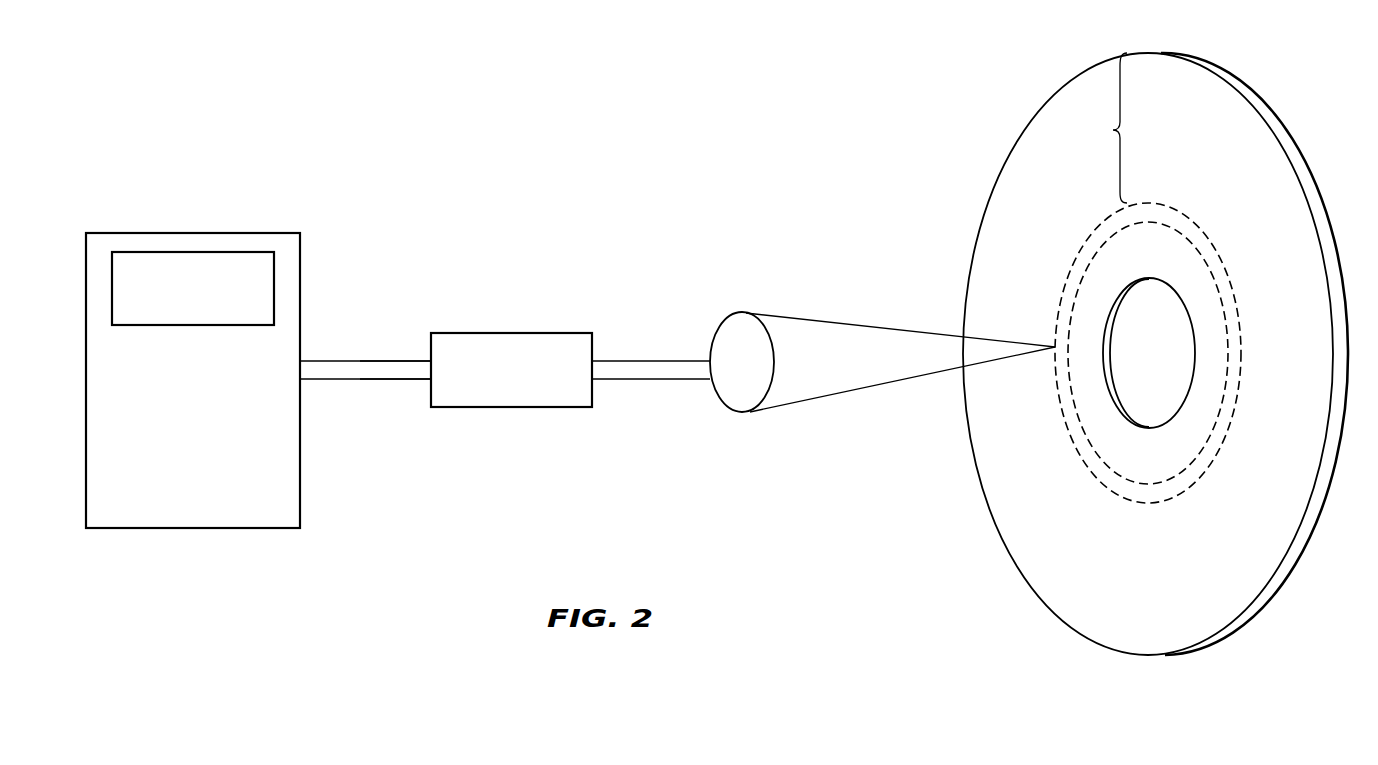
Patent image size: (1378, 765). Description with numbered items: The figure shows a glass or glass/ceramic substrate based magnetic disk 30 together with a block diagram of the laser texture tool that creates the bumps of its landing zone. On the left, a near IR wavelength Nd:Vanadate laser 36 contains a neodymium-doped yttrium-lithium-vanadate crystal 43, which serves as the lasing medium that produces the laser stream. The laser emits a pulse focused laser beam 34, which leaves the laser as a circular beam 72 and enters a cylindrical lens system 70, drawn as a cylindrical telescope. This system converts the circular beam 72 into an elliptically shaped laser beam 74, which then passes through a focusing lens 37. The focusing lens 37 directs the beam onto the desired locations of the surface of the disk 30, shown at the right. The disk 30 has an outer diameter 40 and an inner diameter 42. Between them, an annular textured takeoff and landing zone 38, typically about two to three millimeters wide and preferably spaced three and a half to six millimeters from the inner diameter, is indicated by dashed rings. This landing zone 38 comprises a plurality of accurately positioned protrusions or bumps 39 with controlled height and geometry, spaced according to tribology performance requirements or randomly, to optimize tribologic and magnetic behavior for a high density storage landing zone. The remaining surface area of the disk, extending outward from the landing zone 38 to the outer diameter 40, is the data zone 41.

The magnetic disk 30 is at (1027, 555).
The pulse focused laser beam 34 is at (338, 359).
The Nd:Vanadate laser 36 is at (265, 530).
The focusing lens 37 is at (730, 327).
The landing zone 38 is at (1228, 428).
The bumps 39 is at (1189, 484).
The outer diameter 40 is at (1088, 640).
The data zone 41 is at (1107, 128).
The inner diameter 42 is at (1132, 333).
The neodymium-doped yttrium-lithium-vanadate crystal 43 is at (203, 299).
The cylindrical lens system 70 is at (566, 408).
The circular beam 72 is at (384, 359).
The elliptically shaped laser beam 74 is at (648, 357).